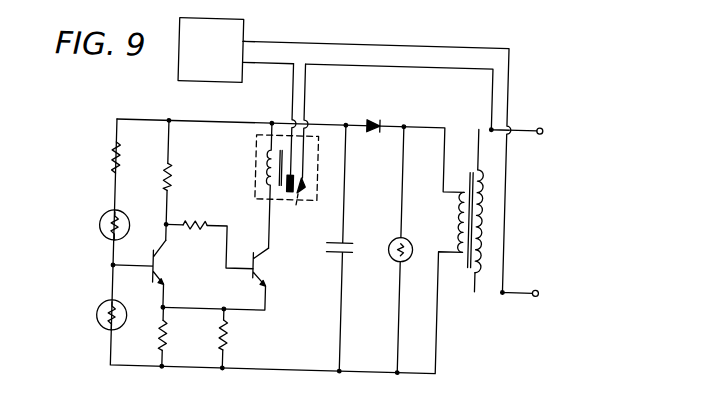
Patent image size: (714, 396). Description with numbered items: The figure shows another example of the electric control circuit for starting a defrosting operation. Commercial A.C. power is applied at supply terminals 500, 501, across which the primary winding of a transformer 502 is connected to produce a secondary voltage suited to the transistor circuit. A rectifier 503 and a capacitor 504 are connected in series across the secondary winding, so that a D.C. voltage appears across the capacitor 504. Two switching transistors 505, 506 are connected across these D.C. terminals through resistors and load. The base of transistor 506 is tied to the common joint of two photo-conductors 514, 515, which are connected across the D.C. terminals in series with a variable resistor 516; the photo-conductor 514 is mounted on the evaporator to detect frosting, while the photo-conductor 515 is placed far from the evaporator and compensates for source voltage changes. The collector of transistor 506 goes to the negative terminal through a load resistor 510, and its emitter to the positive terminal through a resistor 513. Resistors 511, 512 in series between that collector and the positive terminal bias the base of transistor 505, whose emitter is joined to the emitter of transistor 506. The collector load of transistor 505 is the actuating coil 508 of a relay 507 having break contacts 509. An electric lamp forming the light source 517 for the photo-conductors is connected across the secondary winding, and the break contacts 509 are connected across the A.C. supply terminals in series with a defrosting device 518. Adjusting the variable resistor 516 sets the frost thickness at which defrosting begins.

The supply terminal 500 is at (561, 135).
The supply terminal 501 is at (557, 298).
The transformer 502 is at (471, 265).
The rectifier 503 is at (378, 105).
The capacitor 504 is at (357, 249).
The switching transistor 505 is at (237, 278).
The switching transistor 506 is at (157, 273).
The relay 507 is at (314, 165).
The actuating coil 508 is at (258, 162).
The break contacts 509 is at (300, 148).
The load resistor 510 is at (153, 179).
The resistor 511 is at (210, 233).
The resistor 512 is at (245, 339).
The resistor 513 is at (185, 337).
The photo-conductor 514 is at (93, 307).
The photo-conductor 515 is at (100, 220).
The variable resistor 516 is at (96, 157).
The light source 517 is at (416, 249).
The defrosting device 518 is at (188, 60).